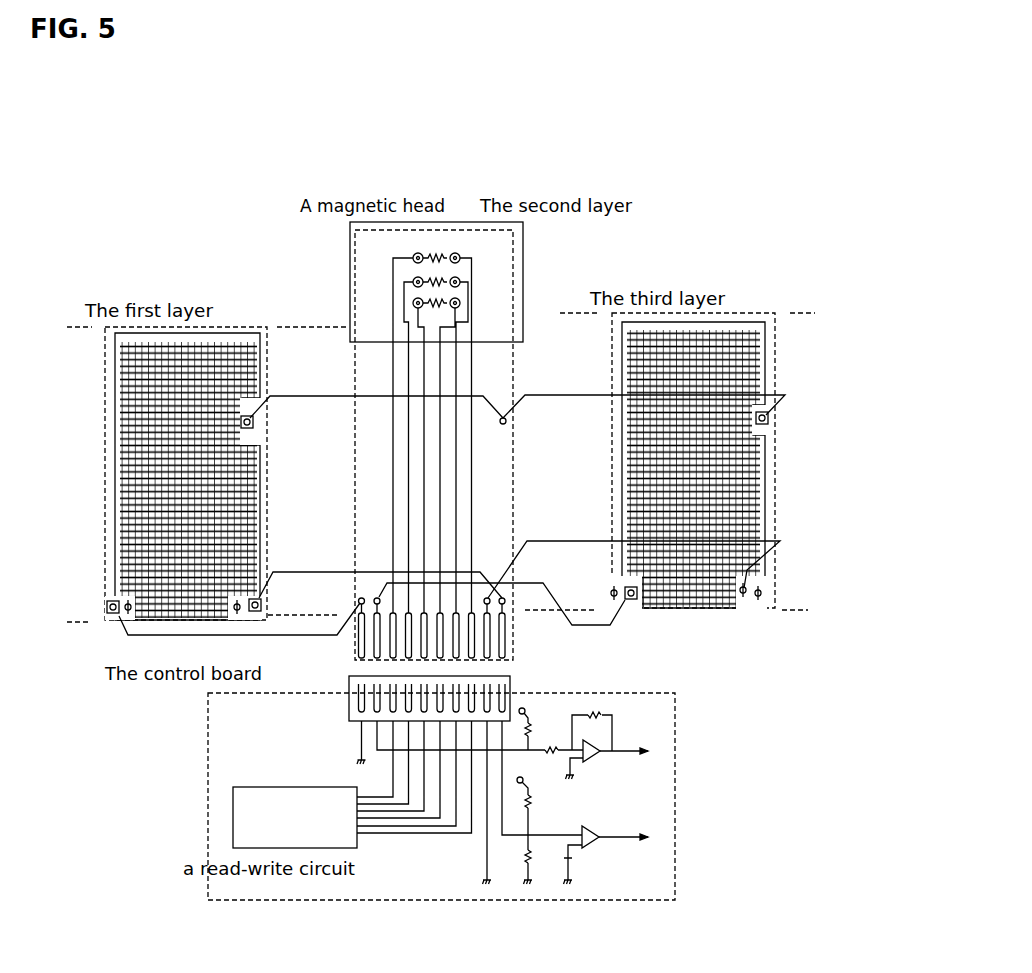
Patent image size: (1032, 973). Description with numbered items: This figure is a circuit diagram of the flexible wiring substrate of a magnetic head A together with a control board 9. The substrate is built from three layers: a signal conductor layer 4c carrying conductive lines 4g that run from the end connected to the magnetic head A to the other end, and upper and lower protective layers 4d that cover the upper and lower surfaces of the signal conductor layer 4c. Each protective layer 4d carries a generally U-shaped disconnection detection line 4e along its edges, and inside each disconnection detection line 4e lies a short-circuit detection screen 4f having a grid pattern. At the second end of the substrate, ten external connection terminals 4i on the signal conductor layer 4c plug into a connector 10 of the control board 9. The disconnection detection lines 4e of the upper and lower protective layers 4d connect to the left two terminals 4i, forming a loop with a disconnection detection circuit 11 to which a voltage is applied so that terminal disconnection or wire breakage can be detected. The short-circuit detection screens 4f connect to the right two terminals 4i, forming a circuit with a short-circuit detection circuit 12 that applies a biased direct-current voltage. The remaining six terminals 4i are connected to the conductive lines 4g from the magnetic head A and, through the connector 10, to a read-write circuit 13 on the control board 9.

The magnetic head A is at (471, 218).
The signal conductor layer 4c is at (515, 357).
The protective layer 4d is at (105, 378).
The disconnection detection line 4e is at (232, 327).
The short-circuit detection screen 4f is at (120, 527).
The conductive lines 4g is at (393, 427).
The external connection terminals 4i is at (358, 642).
The control board 9 is at (208, 714).
The connector 10 is at (349, 722).
The disconnection detection circuit 11 is at (656, 766).
The short-circuit detection circuit 12 is at (656, 852).
The read-write circuit 13 is at (233, 828).